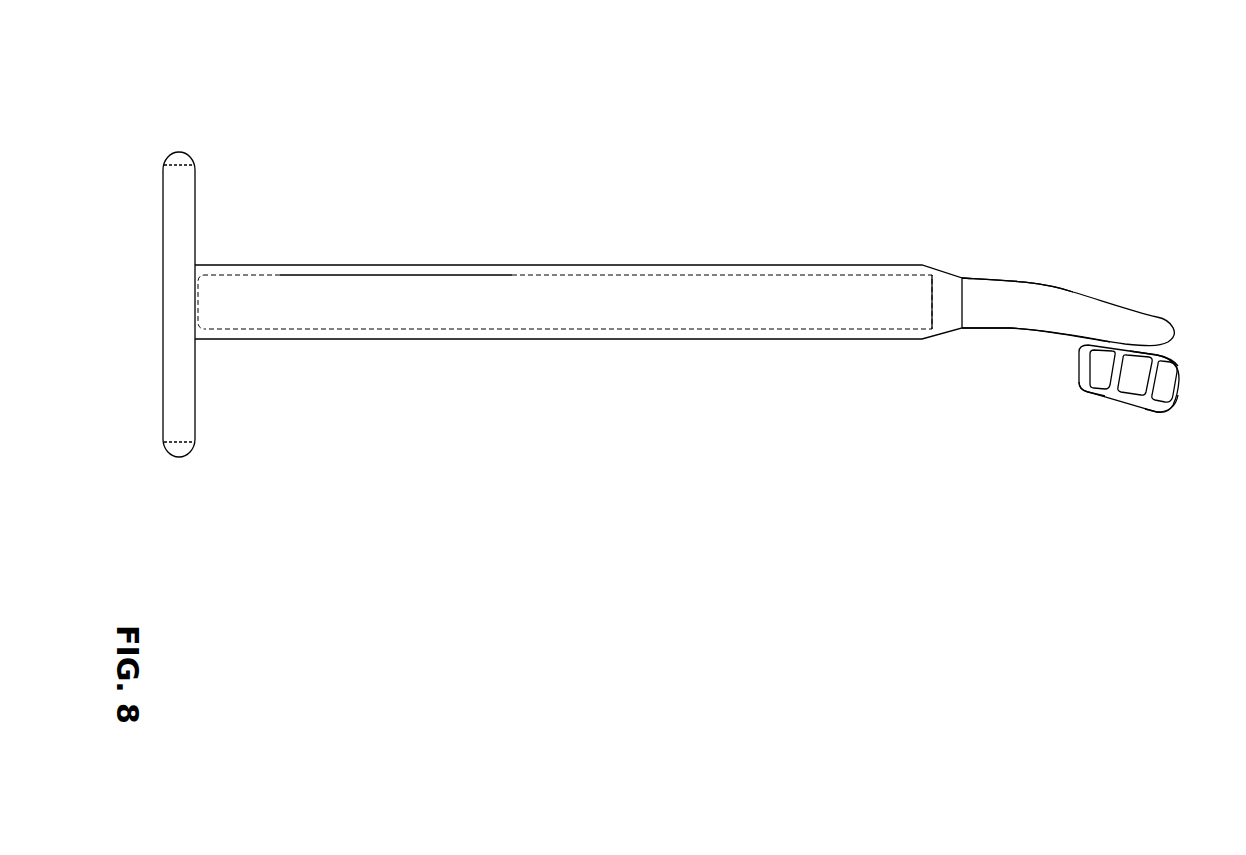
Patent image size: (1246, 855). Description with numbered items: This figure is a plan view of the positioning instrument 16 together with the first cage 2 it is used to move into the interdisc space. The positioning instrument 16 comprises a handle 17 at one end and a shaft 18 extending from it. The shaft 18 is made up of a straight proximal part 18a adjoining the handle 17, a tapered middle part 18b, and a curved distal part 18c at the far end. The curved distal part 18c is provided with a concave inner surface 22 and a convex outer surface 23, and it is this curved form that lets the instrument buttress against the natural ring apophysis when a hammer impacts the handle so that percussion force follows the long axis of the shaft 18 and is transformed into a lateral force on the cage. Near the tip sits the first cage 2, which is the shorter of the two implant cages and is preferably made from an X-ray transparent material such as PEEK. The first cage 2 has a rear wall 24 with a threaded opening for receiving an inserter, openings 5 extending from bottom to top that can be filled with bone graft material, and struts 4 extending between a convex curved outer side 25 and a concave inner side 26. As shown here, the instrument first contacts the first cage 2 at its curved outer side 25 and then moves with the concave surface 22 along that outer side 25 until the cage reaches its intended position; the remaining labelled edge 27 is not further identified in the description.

The handle 17 is at (182, 162).
The positioning instrument 16 is at (333, 255).
The shaft 18 is at (423, 265).
The straight proximal part 18a is at (521, 300).
The tapered middle part 18b is at (892, 302).
The curved distal part 18c is at (1089, 312).
The convex outer surface 23 is at (1047, 280).
The concave inner surface 22 is at (1066, 333).
The first cage 2 is at (1181, 368).
The rear wall 24 is at (1085, 354).
The concave inner side 26 is at (1089, 392).
The openings 5 is at (1099, 376).
The struts 4 is at (1118, 371).
The convex curved outer side 25 is at (1168, 358).
The implant end edge 27 is at (1168, 408).